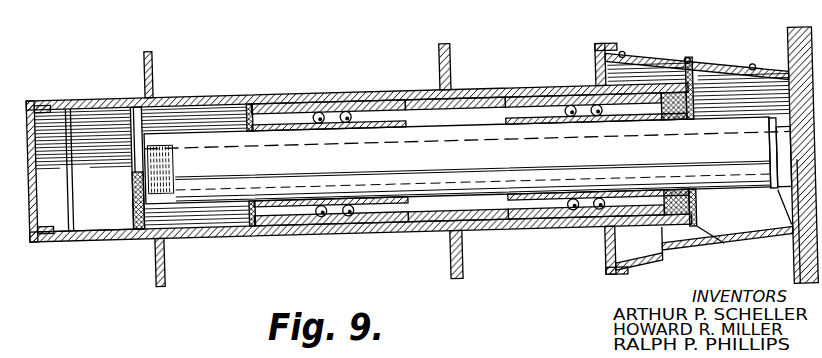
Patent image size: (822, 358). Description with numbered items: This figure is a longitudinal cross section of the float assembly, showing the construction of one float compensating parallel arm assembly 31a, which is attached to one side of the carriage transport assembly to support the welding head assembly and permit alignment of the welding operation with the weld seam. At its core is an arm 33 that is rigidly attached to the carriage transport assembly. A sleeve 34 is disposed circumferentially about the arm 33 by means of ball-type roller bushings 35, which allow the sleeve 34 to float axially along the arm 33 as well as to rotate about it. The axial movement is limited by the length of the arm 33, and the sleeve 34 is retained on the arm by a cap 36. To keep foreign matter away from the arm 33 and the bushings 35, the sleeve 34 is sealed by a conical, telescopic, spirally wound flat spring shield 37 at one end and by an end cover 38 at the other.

The float compensating parallel arm assembly 31a is at (272, 87).
The arm 33 is at (487, 133).
The sleeve 34 is at (107, 236).
The ball-type roller bushings 35 is at (330, 99).
The cap 36 is at (133, 173).
The conical, telescopic, spirally wound flat spring shield 37 is at (707, 70).
The end cover 38 is at (37, 103).